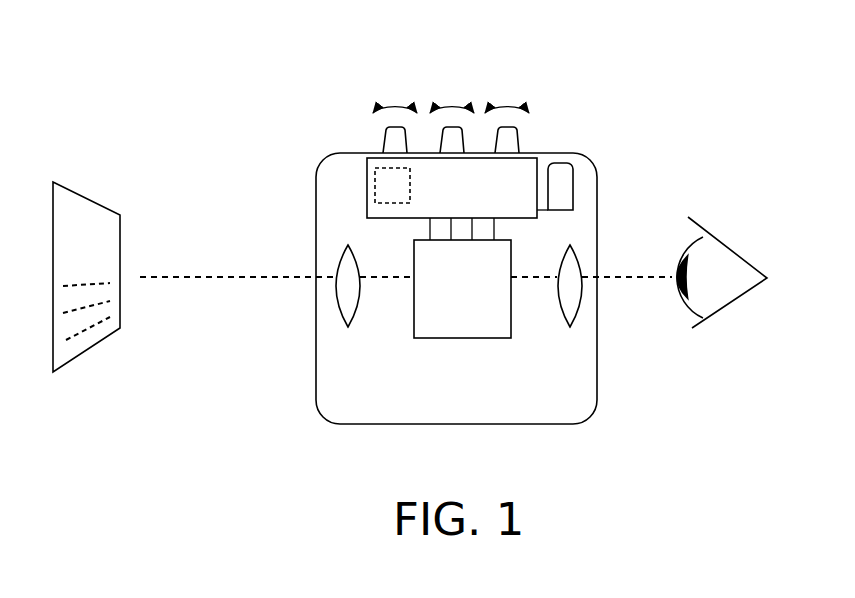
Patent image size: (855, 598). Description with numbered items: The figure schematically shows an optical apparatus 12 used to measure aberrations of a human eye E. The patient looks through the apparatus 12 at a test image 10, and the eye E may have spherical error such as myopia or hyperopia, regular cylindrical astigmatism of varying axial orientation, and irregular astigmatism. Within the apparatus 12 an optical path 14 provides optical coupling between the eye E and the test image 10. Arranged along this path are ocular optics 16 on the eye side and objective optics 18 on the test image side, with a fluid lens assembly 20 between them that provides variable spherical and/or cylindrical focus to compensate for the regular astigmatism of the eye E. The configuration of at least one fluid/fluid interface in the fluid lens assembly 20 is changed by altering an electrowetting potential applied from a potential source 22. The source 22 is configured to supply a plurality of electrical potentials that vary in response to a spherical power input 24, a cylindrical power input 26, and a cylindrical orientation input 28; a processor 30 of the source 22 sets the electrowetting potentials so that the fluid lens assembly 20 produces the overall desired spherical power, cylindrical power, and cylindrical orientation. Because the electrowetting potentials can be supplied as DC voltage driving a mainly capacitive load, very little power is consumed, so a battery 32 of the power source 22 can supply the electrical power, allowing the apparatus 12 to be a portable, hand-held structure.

The test image 10 is at (83, 182).
The optical apparatus 12 is at (308, 400).
The optical path 14 is at (372, 270).
The ocular optics 16 is at (587, 305).
The objective optics 18 is at (331, 312).
The fluid lens assembly 20 is at (473, 338).
The potential source 22 is at (537, 128).
The spherical power input 24 is at (393, 92).
The cylindrical power input 26 is at (457, 92).
The cylindrical orientation input 28 is at (511, 92).
The processor 30 is at (373, 182).
The battery 32 is at (577, 178).
The eye E is at (725, 242).